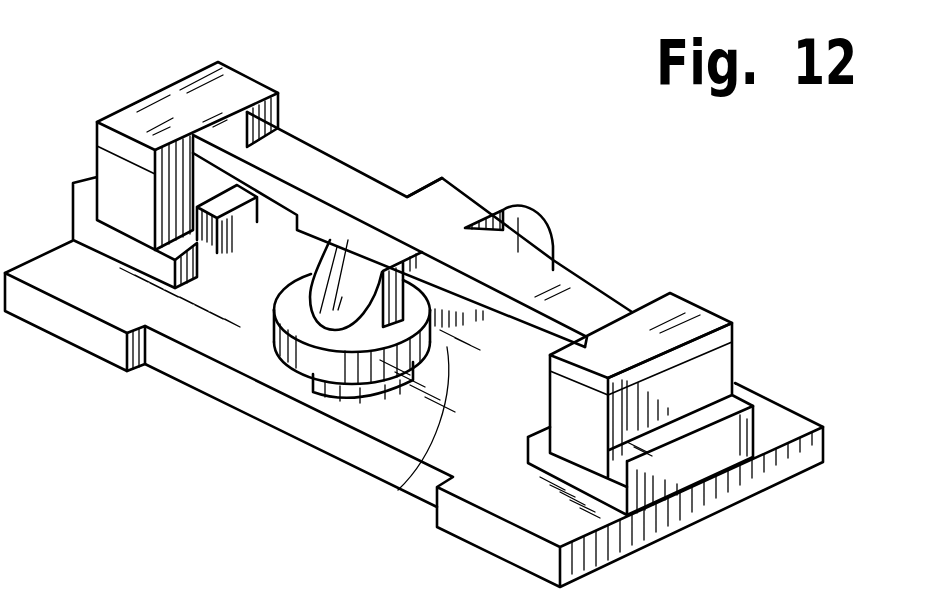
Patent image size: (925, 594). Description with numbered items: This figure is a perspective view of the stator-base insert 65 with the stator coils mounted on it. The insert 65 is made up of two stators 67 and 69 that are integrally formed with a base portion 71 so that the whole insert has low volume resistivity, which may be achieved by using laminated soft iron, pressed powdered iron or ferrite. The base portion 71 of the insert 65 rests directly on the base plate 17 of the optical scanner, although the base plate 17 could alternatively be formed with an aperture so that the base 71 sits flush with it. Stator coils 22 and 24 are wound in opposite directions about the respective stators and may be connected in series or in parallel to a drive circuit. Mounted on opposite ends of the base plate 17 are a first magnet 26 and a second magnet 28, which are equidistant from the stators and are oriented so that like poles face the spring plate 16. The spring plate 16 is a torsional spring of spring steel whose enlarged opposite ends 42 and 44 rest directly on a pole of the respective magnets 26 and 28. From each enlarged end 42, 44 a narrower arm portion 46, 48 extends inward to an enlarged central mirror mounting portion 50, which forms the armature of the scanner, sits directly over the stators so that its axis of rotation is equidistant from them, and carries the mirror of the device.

The spring plate 16 is at (375, 162).
The base plate 17 is at (437, 482).
The stator coil 22 is at (348, 348).
The stator coil 24 is at (558, 243).
The first magnet 26 is at (717, 371).
The second magnet 28 is at (97, 162).
The enlarged end of spring plate 42 is at (700, 314).
The enlarged end of spring plate 44 is at (240, 97).
The arm portion 46 is at (602, 312).
The arm portion 48 is at (294, 153).
The mirror mounting portion 50 is at (453, 202).
The stator-base insert 65 is at (360, 394).
The stator 67 is at (283, 304).
The stator 69 is at (518, 215).
The base portion of insert 71 is at (393, 480).